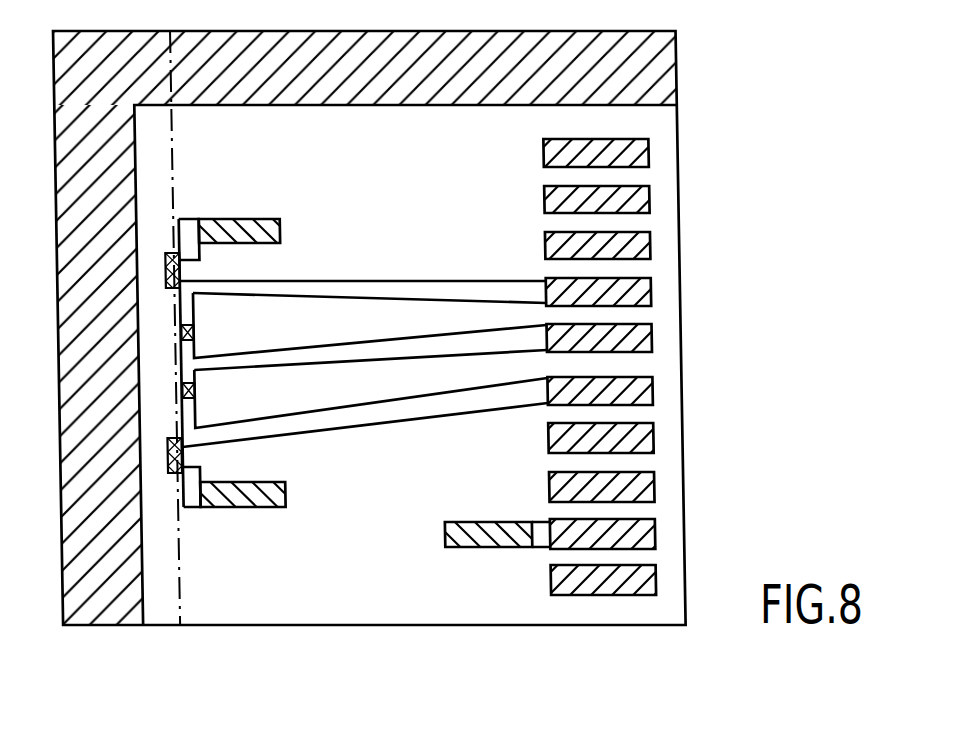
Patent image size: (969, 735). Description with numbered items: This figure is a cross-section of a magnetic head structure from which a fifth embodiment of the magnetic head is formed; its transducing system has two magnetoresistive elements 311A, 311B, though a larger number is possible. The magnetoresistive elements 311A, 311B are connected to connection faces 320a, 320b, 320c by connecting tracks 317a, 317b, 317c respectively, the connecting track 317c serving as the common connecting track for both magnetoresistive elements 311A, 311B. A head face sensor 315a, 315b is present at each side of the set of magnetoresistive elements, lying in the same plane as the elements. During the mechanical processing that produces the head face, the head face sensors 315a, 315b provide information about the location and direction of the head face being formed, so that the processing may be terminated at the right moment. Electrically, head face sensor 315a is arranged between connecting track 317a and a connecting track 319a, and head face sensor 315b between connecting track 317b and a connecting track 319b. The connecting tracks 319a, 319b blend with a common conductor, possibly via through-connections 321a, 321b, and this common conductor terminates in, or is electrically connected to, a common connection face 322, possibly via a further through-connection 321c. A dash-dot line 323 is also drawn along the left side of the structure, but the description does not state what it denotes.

The center axis line 323 is at (171, 136).
The connecting track 319a is at (184, 235).
The through-connection 321a is at (259, 230).
The head face sensor 315a is at (177, 273).
The connecting track 317a is at (337, 287).
The magnetoresistive element 311A is at (188, 332).
The connecting track 317c is at (307, 352).
The magnetoresistive element 311B is at (188, 391).
The connecting track 317b is at (326, 415).
The head face sensor 315b is at (177, 455).
The connecting track 319b is at (183, 495).
The through-connection 321b is at (257, 497).
The through-connection 321c is at (474, 547).
The connection face 320a is at (615, 290).
The connection face 320c is at (617, 340).
The connection face 320b is at (613, 390).
The common connection face 322 is at (609, 535).